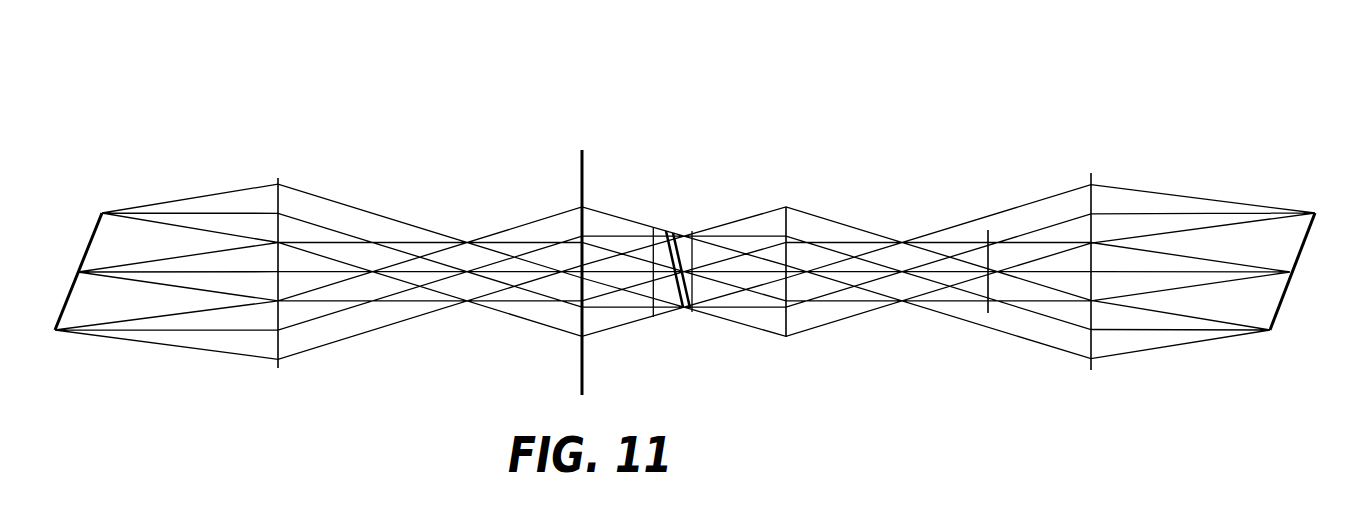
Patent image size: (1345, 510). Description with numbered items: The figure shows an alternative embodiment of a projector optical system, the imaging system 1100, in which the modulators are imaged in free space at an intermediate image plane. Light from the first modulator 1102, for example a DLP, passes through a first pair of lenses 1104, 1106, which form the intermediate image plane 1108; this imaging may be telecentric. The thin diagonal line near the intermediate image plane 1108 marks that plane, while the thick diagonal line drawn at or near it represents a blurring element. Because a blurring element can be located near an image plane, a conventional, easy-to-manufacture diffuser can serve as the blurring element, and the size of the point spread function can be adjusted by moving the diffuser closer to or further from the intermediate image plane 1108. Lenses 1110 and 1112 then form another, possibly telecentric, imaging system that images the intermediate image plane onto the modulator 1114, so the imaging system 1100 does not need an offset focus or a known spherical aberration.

The imaging system 1100 is at (525, 50).
The first modulator 1102 is at (85, 245).
The lens 1104 is at (278, 170).
The lens 1106 is at (582, 142).
The intermediate image plane 1108 is at (672, 222).
The lens 1110 is at (785, 200).
The lens 1112 is at (1088, 165).
The modulator 1114 is at (1287, 302).